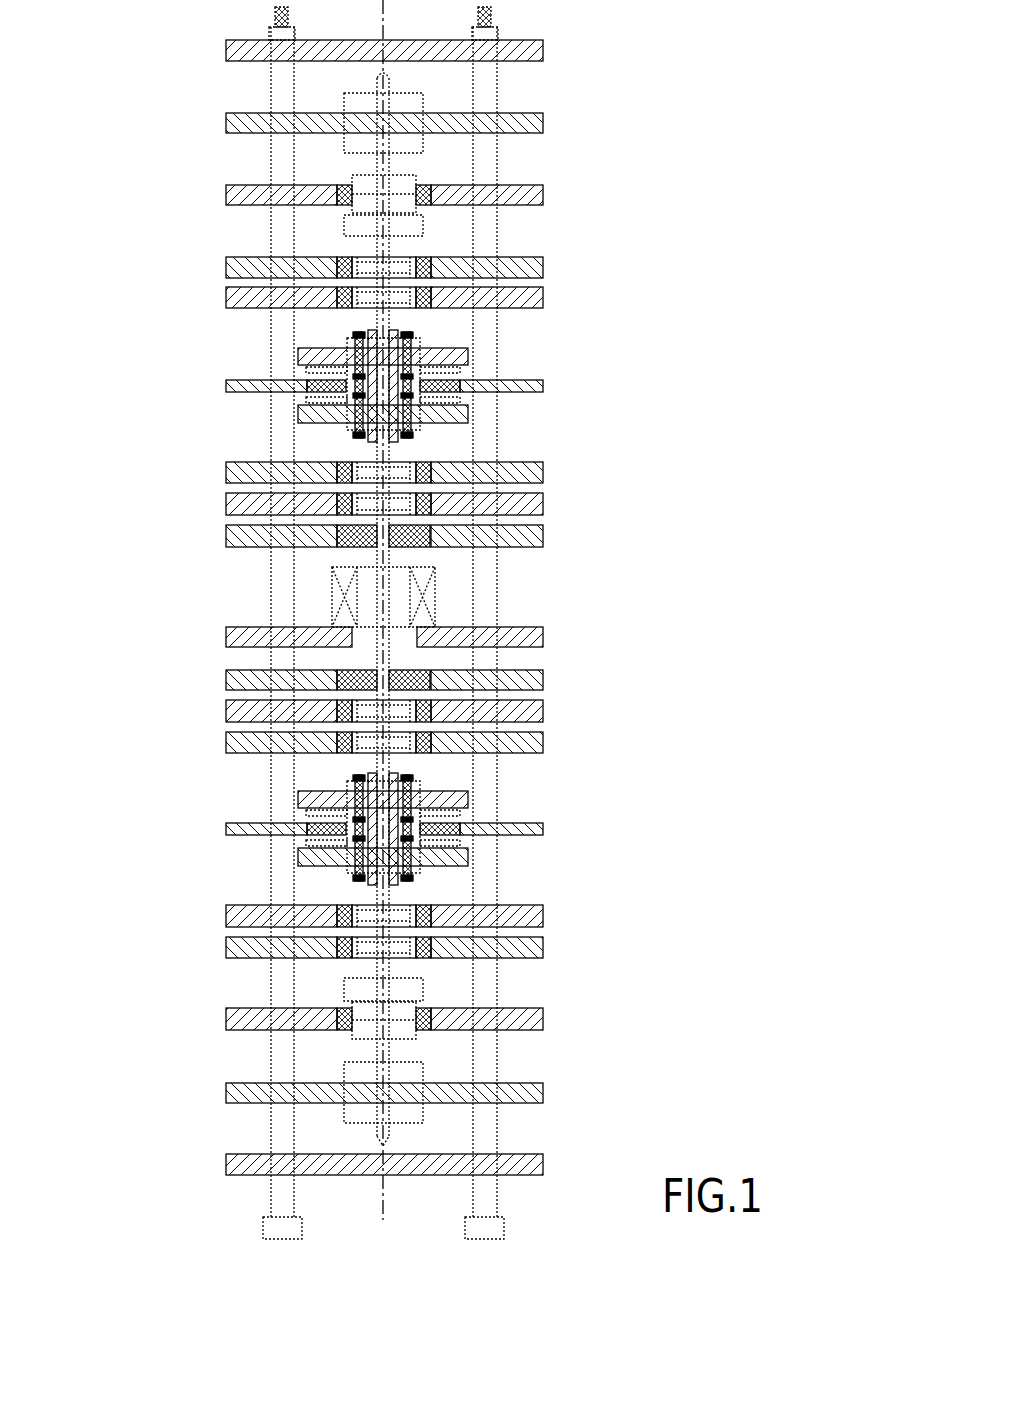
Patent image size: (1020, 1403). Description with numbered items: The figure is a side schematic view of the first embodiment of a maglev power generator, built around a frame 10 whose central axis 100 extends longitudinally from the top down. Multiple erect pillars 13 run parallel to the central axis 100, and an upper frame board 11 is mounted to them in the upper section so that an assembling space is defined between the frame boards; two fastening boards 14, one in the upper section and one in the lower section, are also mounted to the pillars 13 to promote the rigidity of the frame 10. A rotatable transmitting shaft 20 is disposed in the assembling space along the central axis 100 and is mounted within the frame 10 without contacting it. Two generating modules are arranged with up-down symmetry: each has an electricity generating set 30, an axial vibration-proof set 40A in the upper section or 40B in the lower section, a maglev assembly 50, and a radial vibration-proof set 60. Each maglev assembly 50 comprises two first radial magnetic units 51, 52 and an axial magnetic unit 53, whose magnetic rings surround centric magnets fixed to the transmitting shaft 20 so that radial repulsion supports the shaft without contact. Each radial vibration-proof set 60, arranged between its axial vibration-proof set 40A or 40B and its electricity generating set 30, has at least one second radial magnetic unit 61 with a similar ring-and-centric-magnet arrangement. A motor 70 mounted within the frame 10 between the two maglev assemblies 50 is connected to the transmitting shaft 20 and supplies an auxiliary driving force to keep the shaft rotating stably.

The frame 10 is at (541, 91).
The central axis 100 is at (386, 13).
The frame board 11 is at (537, 125).
The pillar 13 is at (280, 1132).
The fastening board 14 is at (528, 48).
The transmitting shaft 20 is at (376, 556).
The electricity generating set 30 is at (218, 370).
The axial vibration-proof set 40A is at (218, 192).
The axial vibration-proof set 40B is at (218, 1013).
The maglev assembly 50 is at (380, 594).
The first radial magnetic unit 51 is at (549, 470).
The first radial magnetic unit 52 is at (549, 503).
The axial magnetic unit 53 is at (549, 536).
The radial vibration-proof set 60 is at (379, 593).
The second radial magnetic unit 61 is at (549, 267).
The motor 70 is at (541, 612).